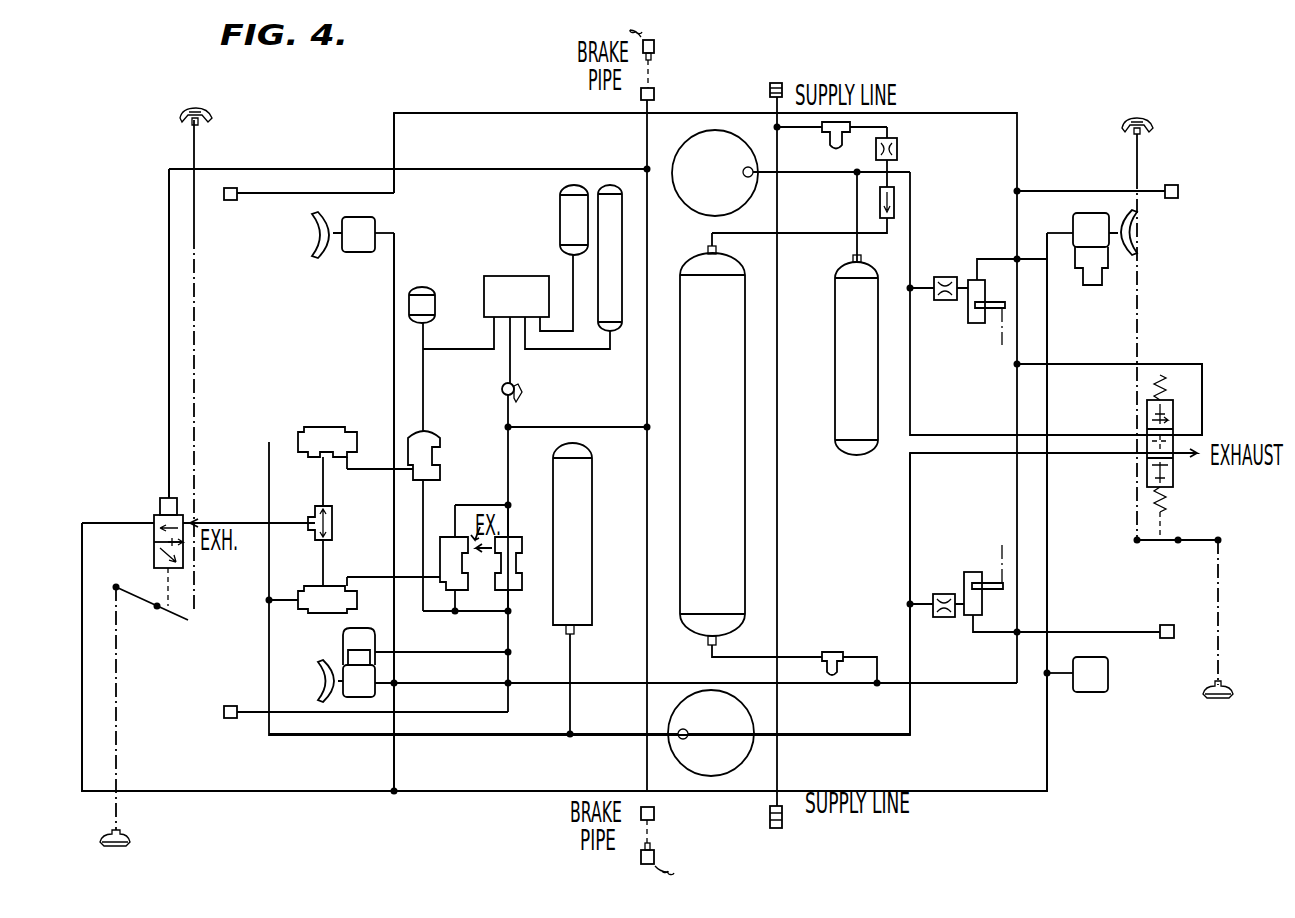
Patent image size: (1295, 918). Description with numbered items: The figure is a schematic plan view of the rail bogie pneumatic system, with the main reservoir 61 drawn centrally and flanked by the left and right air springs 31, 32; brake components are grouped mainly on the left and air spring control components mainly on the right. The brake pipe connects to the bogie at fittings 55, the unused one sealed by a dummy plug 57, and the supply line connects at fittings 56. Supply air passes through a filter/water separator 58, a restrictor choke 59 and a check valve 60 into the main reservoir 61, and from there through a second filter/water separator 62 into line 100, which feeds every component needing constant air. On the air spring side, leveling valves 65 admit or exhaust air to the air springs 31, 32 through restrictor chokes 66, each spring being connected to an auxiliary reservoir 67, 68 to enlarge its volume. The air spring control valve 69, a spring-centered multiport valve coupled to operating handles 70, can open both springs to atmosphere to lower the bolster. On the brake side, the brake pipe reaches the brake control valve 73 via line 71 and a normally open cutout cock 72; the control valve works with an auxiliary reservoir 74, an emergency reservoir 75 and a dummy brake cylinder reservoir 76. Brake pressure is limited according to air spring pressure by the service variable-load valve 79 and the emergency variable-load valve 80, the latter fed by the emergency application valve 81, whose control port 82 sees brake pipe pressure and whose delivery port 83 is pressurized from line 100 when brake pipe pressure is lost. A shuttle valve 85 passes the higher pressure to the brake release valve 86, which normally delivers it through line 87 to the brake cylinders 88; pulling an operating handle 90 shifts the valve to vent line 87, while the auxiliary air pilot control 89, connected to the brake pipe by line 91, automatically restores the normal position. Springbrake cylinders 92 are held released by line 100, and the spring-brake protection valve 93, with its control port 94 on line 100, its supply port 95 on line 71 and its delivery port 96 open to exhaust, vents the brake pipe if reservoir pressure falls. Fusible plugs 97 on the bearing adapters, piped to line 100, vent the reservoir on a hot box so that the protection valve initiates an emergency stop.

The left air spring 31 is at (700, 138).
The right air spring 32 is at (728, 766).
The brake pipe fitting 55 is at (655, 90).
The supply line fitting 56 is at (770, 92).
The dummy plug 57 is at (661, 45).
The filter/water separator 58 is at (830, 140).
The restrictor choke 59 is at (898, 151).
The check valve 60 is at (894, 200).
The main reservoir 61 is at (712, 445).
The second filter/water separator 62 is at (830, 652).
The leveling valve 65 is at (968, 320).
The restrictor choke 66 is at (945, 277).
The auxiliary reservoir 67 is at (856, 355).
The auxiliary reservoir 68 is at (572, 538).
The air spring control valve 69 is at (1195, 472).
The operating handle 70 is at (1137, 112).
The line 71 is at (645, 386).
The cutout cock 72 is at (522, 390).
The brake control valve 73 is at (522, 276).
The auxiliary reservoir 74 is at (574, 220).
The emergency reservoir 75 is at (610, 258).
The dummy brake cylinder reservoir 76 is at (435, 305).
The service variable-load valve 79 is at (327, 427).
The emergency variable-load valve 80 is at (298, 605).
The emergency application valve 81 is at (440, 540).
The control port 82 is at (456, 537).
The delivery port 83 is at (440, 582).
The shuttle valve 85 is at (332, 534).
The brake release valve 86 is at (142, 535).
The line 87 is at (82, 573).
The brake cylinder 88 is at (724, 456).
The auxiliary air pilot control 89 is at (160, 500).
The operating handle 90 is at (208, 112).
The line 91 is at (469, 169).
The springbrake cylinder 92 is at (350, 650).
The spring-brake protection valve 93 is at (522, 563).
The control port 94 is at (512, 598).
The supply port 95 is at (510, 532).
The delivery port 96 is at (483, 556).
The fusible plug 97 is at (229, 200).
The line 100 is at (1202, 378).